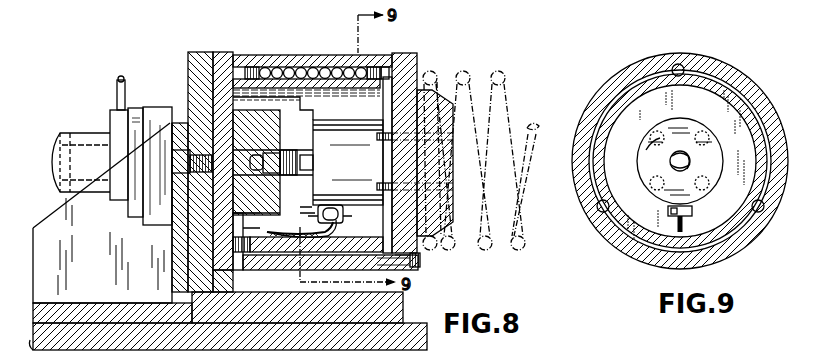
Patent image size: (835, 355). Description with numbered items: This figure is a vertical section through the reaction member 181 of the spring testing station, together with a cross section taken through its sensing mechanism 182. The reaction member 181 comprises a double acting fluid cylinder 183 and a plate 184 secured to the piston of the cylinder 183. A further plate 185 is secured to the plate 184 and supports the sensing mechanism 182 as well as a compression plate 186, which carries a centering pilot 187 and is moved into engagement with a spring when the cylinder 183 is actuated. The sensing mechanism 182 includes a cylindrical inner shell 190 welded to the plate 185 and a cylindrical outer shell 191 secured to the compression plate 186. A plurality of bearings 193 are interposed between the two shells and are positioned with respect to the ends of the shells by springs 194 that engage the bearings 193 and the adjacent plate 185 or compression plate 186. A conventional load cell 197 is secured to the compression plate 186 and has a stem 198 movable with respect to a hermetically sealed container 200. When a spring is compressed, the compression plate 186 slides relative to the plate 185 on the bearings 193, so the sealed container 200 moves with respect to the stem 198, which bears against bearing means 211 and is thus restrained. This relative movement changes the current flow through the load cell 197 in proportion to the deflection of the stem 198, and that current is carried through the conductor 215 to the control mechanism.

In FIG. 8, the reaction member 181 is at (181, 48).
In FIG. 8, the sensing mechanism 182 is at (400, 51).
In FIG. 8, the double acting fluid cylinder 183 is at (82, 133).
In FIG. 8, the plate 184 is at (188, 64).
In FIG. 8, the plate 185 is at (232, 58).
In FIG. 8, the compression plate 186 is at (417, 72).
In FIG. 8, the centering pilot 187 is at (460, 71).
In FIG. 8, the cylindrical inner shell 190 is at (313, 90).
In FIG. 9, the cylindrical inner shell 190 is at (632, 86).
In FIG. 8, the cylindrical outer shell 191 is at (312, 56).
In FIG. 9, the cylindrical outer shell 191 is at (760, 86).
In FIG. 9, the bearings 193 is at (684, 63).
In FIG. 8, the springs 194 is at (249, 64).
In FIG. 8, the load cell 197 is at (360, 200).
In FIG. 9, the load cell 197 is at (640, 131).
In FIG. 8, the stem 198 is at (310, 215).
In FIG. 9, the stem 198 is at (670, 163).
In FIG. 8, the hermetically sealed container 200 is at (360, 114).
In FIG. 9, the hermetically sealed container 200 is at (710, 130).
In FIG. 8, the bearing means 211 is at (284, 150).
In FIG. 8, the conductor 215 is at (267, 232).
In FIG. 9, the conductor 215 is at (694, 222).